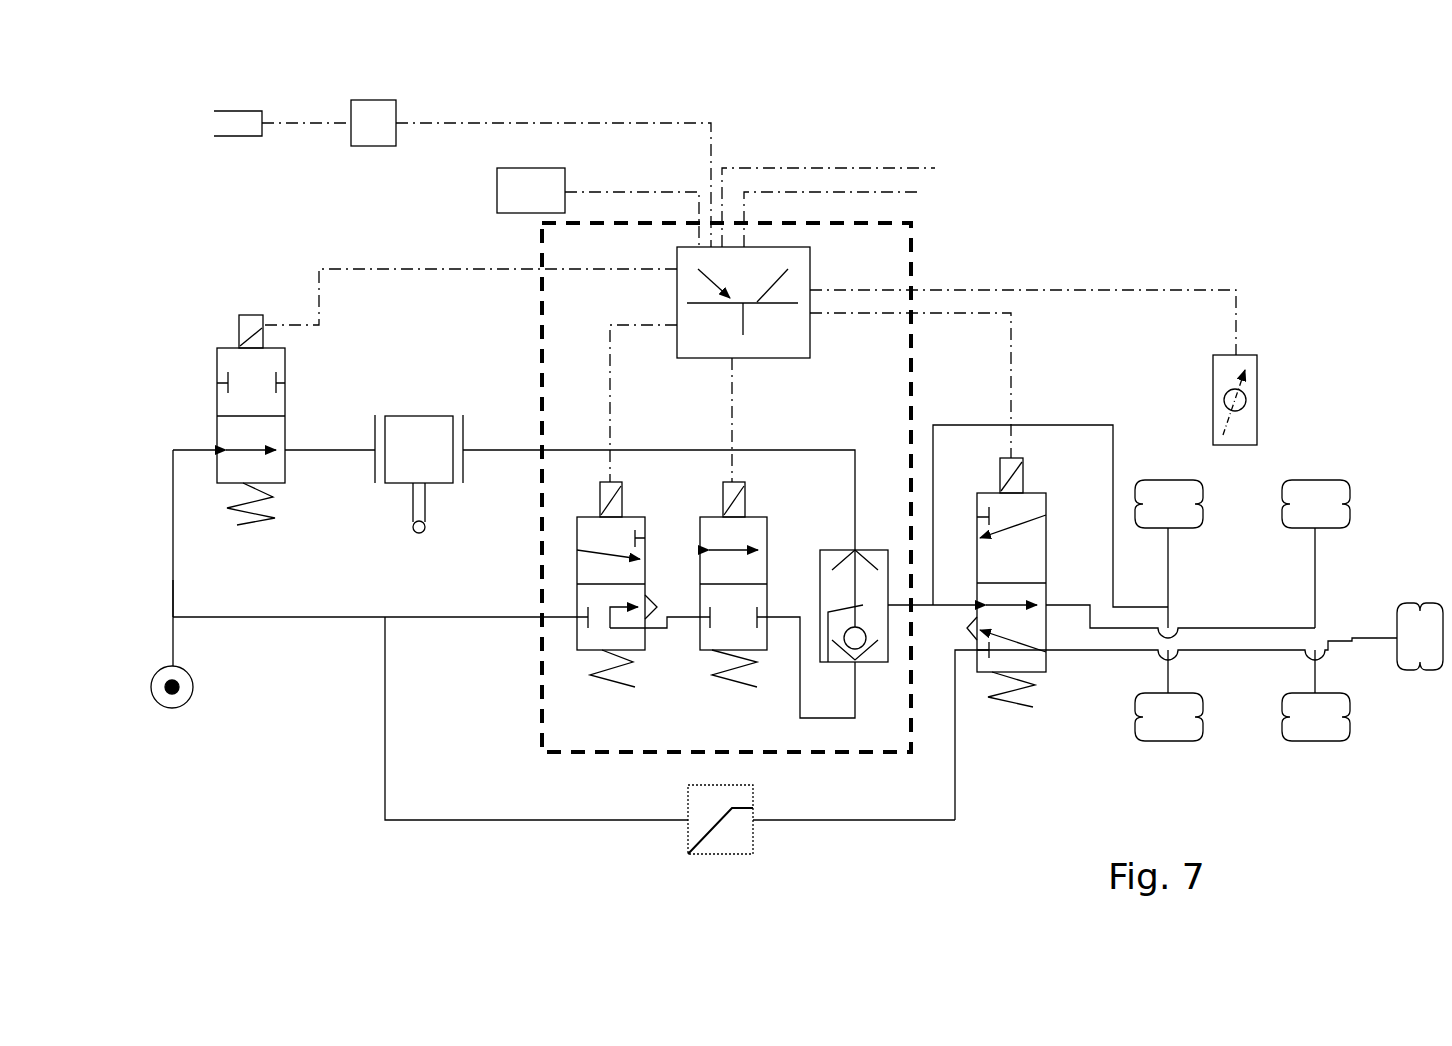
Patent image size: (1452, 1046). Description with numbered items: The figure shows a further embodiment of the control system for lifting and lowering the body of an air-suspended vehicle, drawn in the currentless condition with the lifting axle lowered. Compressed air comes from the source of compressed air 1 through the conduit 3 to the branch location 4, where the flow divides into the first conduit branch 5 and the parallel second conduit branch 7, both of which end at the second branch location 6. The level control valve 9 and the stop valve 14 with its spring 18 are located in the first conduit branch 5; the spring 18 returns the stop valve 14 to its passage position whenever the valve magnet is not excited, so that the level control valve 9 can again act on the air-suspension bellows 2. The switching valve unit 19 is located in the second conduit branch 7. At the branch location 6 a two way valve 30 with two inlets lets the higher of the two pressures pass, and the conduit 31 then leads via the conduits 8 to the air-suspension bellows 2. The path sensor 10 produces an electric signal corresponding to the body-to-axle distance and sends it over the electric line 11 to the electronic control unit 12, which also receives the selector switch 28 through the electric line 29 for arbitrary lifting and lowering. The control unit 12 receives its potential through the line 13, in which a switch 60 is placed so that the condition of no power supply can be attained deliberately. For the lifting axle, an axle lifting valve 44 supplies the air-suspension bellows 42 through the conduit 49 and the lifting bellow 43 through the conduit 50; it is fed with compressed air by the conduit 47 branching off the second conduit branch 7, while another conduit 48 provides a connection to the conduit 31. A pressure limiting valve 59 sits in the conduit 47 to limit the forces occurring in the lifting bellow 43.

The source of compressed air 1 is at (182, 687).
The air-suspension bellows 2 is at (1157, 492).
The conduit 3 is at (173, 643).
The branch location 4 is at (173, 617).
The first conduit branch 5 is at (322, 447).
The second branch location 6 is at (833, 663).
The second conduit branch 7 is at (433, 620).
The conduits 8 is at (1168, 570).
The level control valve 9 is at (413, 410).
The path sensor 10 is at (1242, 427).
The electric line 11 is at (412, 268).
The electronic control unit 12 is at (793, 285).
The line 13 is at (494, 123).
The stop valve 14 is at (198, 392).
The spring 18 is at (237, 525).
The switching valve unit 19 is at (640, 503).
The selector switch 28 is at (530, 175).
The electric line 29 is at (593, 190).
The two way valve 30 is at (861, 720).
The conduit 31 is at (1048, 423).
The air-suspension bellows 42 is at (1312, 492).
The lifting bellow 43 is at (1413, 653).
The axle lifting valve 44 is at (1053, 487).
The conduit 47 is at (530, 823).
The conduit 48 is at (949, 605).
The conduit 49 is at (1115, 628).
The conduit 50 is at (1242, 650).
The pressure limiting valve 59 is at (732, 835).
The switch 60 is at (367, 117).